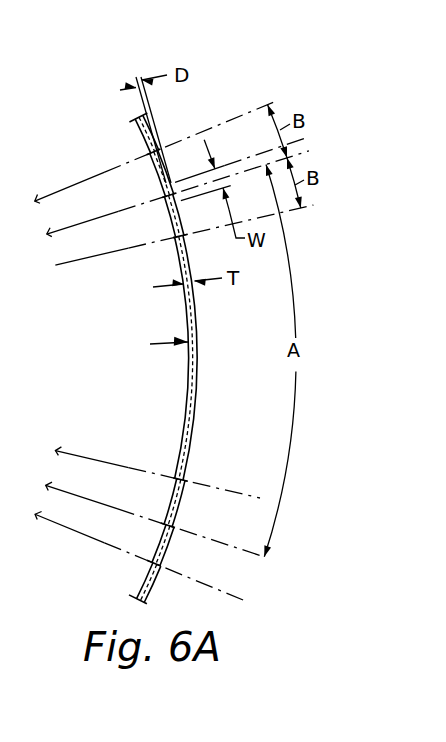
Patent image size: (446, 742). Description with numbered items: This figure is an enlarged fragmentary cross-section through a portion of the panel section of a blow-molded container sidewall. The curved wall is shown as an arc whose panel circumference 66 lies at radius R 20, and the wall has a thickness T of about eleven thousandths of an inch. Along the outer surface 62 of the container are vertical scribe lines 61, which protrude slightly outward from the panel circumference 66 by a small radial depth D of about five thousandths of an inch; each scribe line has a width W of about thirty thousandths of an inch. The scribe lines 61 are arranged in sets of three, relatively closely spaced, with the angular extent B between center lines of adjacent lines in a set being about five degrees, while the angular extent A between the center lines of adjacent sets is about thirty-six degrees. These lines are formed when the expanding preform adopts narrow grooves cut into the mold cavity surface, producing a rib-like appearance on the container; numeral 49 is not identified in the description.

The inner surface of strip 49 is at (187, 392).
The vertical scribe lines 61 is at (190, 473).
The outer surface of the container 62 is at (190, 358).
The panel circumference 66 is at (197, 320).
The radius R20 20 is at (50, 348).